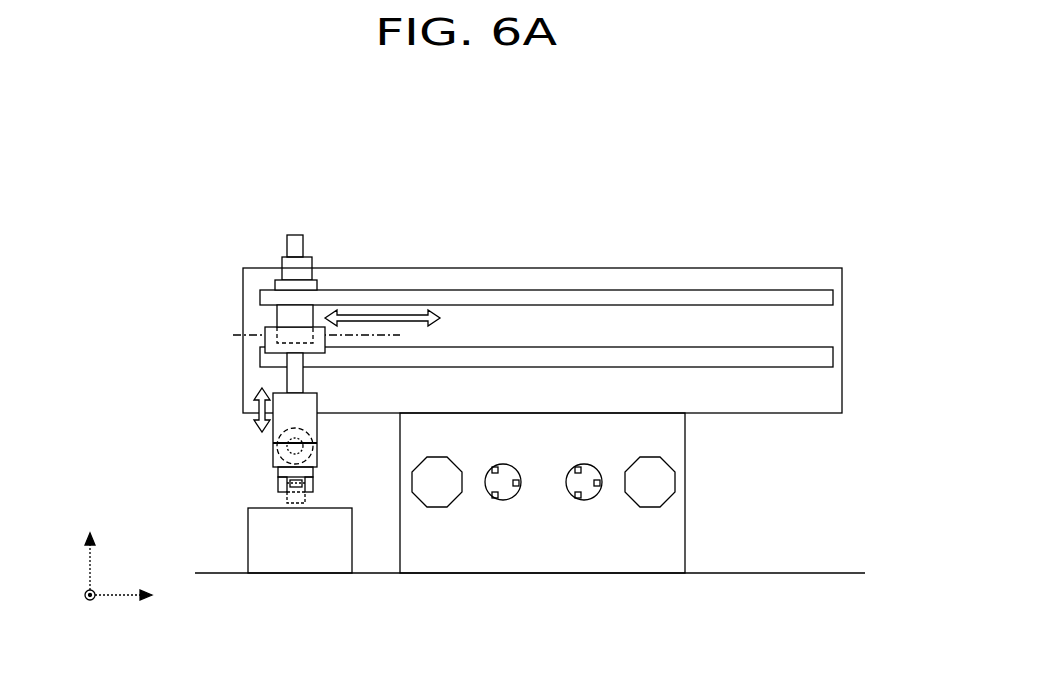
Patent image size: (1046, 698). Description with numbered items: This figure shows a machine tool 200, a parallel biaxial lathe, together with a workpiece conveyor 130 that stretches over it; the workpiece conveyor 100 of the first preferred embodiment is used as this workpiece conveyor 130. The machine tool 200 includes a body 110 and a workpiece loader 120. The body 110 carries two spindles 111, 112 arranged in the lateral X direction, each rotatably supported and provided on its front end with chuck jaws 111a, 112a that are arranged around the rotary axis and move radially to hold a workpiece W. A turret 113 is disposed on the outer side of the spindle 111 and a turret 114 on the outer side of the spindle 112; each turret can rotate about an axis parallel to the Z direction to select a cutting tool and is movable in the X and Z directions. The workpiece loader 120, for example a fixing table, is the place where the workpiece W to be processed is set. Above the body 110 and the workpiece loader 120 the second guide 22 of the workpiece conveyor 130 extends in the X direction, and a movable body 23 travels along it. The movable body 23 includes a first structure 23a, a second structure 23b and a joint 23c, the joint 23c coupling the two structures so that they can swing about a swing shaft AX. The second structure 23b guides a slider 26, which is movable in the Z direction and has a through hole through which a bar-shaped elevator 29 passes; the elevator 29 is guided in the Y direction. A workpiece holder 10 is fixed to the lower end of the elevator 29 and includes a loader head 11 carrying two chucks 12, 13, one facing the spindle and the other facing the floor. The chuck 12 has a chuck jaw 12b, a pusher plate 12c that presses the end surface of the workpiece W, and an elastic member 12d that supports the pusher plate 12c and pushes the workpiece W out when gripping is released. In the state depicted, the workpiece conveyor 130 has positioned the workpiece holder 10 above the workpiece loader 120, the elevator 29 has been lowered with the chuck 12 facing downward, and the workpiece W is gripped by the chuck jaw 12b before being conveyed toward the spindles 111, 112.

The machine tool 200 is at (830, 150).
The second guide 22 is at (530, 289).
The body 110 is at (700, 485).
The spindle 111 is at (497, 500).
The chuck jaws 111a is at (497, 498).
The spindle 112 is at (585, 500).
The chuck jaws 112a is at (599, 487).
The turret 113 is at (437, 500).
The turret 114 is at (667, 500).
The workpiece loader 120 is at (283, 560).
The workpiece conveyor 100 is at (281, 388).
The workpiece conveyor 130 is at (212, 240).
The elevator 29 is at (300, 235).
The slider 26 is at (307, 263).
The swing shaft AX is at (385, 335).
The movable body 23 is at (163, 263).
The first structure 23a is at (273, 342).
The second structure 23b is at (277, 285).
The joint 23c is at (262, 325).
The workpiece holder 10 is at (326, 441).
The loader head 11 is at (200, 448).
The chuck 13 is at (272, 463).
The chuck 12 is at (276, 472).
The chuck jaw 12b is at (283, 492).
The pusher plate 12c is at (299, 490).
The elastic member 12d is at (310, 490).
The workpiece W is at (280, 497).